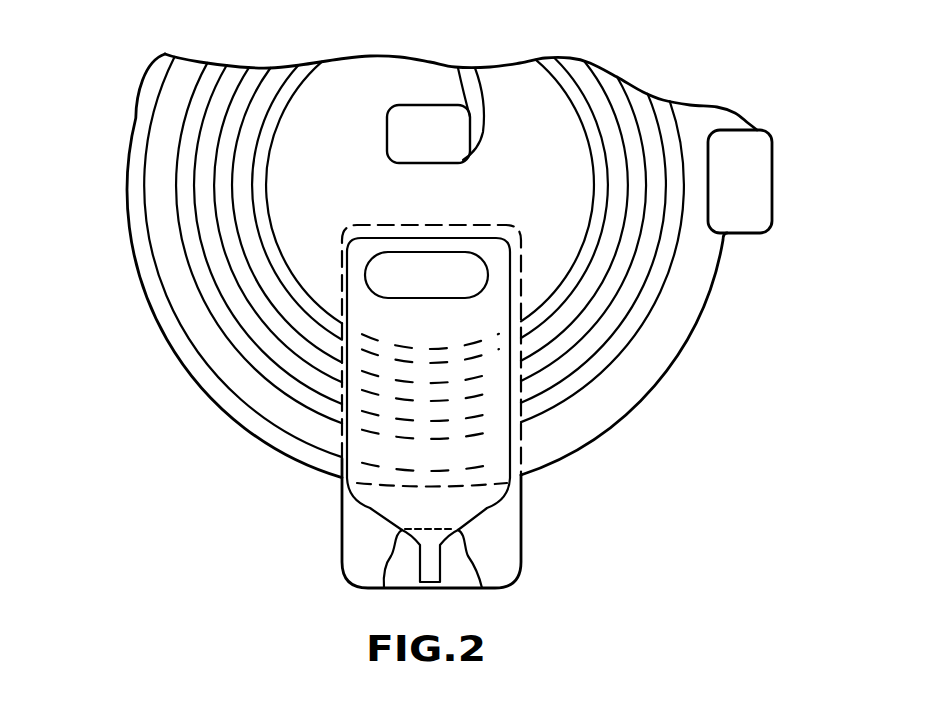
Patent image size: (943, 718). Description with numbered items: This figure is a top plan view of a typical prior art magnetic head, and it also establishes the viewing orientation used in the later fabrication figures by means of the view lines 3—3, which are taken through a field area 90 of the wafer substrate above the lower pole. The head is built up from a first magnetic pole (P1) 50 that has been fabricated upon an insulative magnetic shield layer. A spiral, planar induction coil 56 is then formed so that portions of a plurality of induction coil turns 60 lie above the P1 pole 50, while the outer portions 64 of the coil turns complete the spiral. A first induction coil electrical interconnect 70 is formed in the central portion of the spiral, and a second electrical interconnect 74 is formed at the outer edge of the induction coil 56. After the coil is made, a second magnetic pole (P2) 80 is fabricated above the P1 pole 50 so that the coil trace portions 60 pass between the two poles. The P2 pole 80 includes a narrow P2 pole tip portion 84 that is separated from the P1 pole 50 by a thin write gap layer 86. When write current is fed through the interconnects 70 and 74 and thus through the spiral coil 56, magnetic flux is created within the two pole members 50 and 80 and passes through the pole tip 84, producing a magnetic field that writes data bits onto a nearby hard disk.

The first magnetic pole (P1) 50 is at (509, 533).
The spiral planar induction coil 56 is at (667, 357).
The induction coil turns 60 is at (377, 428).
The outer portions of the induction coil turns 64 is at (158, 298).
The first induction coil electrical interconnect 70 is at (388, 130).
The second electrical interconnect 74 is at (753, 215).
The second magnetic pole (P2) 80 is at (494, 498).
The P2 pole tip portion 84 is at (430, 568).
The write gap layer 86 is at (467, 574).
The field area 90 is at (451, 190).
The view lines 3— 3 is at (112, 153).